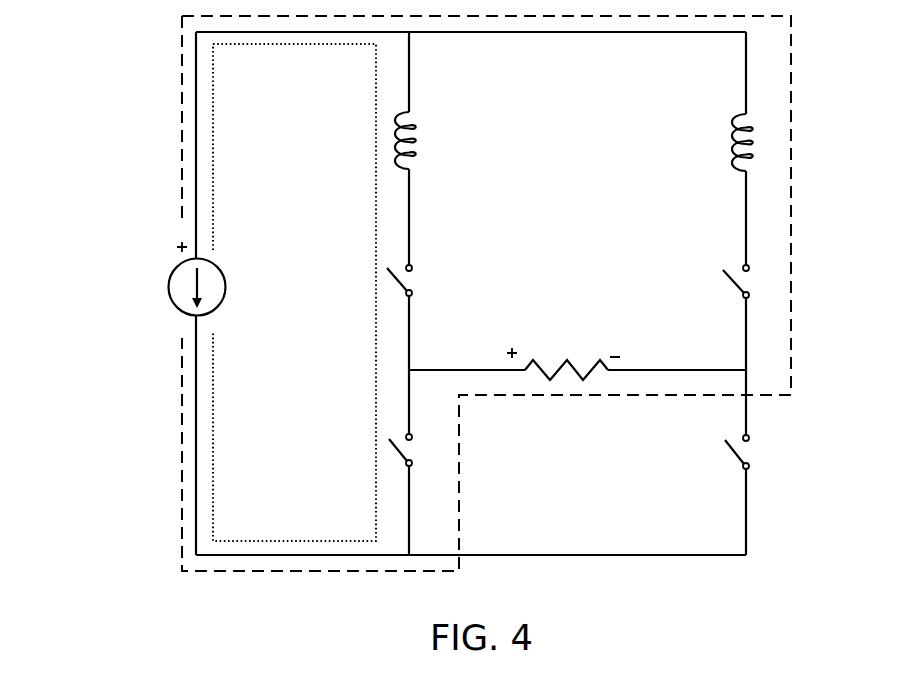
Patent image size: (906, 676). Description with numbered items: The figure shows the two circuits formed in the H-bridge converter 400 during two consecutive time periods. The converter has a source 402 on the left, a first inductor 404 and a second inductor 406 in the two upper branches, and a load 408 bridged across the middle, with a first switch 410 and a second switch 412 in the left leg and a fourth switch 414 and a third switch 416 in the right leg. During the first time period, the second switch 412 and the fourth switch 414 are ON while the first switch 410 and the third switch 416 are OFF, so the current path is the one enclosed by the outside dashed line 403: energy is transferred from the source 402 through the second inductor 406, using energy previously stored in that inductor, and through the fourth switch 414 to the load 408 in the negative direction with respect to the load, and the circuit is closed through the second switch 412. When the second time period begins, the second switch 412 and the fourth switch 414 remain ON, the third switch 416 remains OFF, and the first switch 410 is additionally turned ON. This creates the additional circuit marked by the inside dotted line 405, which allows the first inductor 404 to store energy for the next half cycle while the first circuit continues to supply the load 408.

The H-bridge converter 400 is at (80, 90).
The source U1 402 is at (171, 279).
The outside dashed line 403 is at (370, 571).
The inductor L1 404 is at (405, 123).
The inside dotted line 405 is at (375, 96).
The inductor L2 406 is at (730, 122).
The load R1 408 is at (602, 360).
The switch S1 410 is at (408, 276).
The switch S2 412 is at (399, 453).
The switch S4 414 is at (732, 282).
The switch S3 416 is at (732, 452).